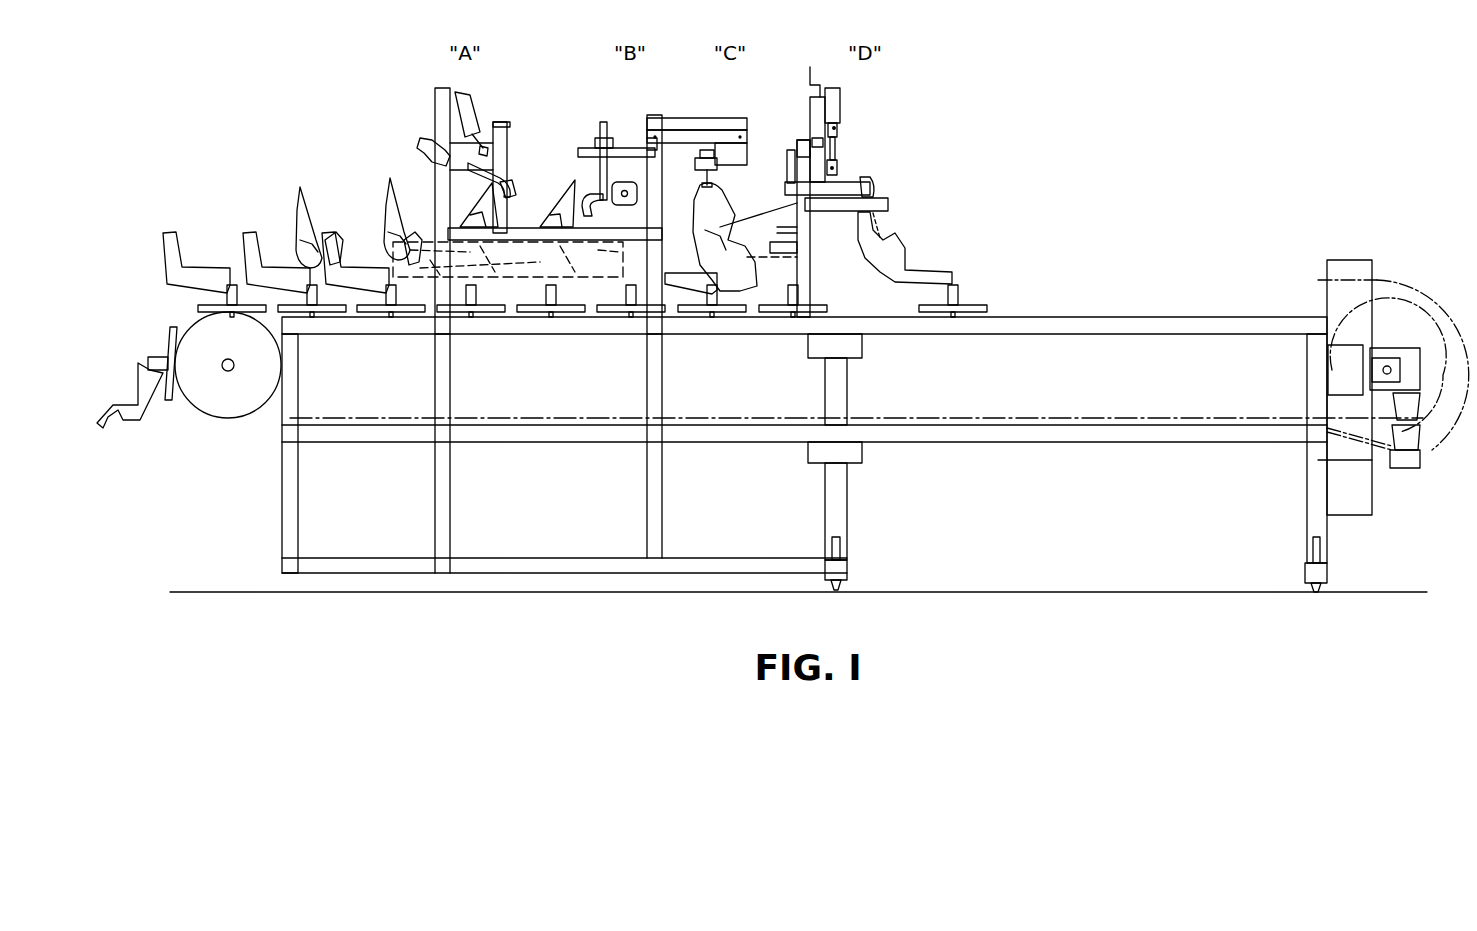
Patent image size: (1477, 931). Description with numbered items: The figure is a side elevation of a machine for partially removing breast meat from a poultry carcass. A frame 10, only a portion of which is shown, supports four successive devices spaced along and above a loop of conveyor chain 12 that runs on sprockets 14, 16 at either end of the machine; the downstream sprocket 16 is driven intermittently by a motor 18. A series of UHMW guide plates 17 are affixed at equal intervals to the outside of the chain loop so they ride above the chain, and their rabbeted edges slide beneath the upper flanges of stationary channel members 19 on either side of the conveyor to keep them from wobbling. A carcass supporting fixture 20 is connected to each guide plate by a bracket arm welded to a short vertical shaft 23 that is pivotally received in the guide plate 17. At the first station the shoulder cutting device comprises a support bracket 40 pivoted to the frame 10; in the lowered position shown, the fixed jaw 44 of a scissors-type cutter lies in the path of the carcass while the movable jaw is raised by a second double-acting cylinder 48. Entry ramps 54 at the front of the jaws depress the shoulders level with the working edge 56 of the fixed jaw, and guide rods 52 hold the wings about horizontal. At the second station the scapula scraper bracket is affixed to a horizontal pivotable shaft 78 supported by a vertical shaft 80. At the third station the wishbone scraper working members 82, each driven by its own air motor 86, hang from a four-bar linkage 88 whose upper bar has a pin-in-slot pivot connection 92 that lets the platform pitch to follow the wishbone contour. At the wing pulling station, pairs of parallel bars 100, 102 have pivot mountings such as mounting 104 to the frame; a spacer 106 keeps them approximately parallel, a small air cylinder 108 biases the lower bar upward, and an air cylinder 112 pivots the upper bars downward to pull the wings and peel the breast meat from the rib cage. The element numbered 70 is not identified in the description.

The frame 10 is at (718, 443).
The conveyor chain 12 is at (1063, 418).
The sprocket 14 is at (204, 406).
The downstream sprocket 16 is at (1400, 322).
The guide plate 17 is at (166, 327).
The motor 18 is at (1410, 468).
The channel member 19 is at (206, 276).
The carcass supporting fixture 20 is at (299, 187).
The vertical shaft 23 is at (960, 298).
The support bracket 40 is at (503, 126).
The fixed jaw 44 is at (505, 190).
The second double-acting cylinder 48 is at (430, 157).
The guide rods 52 is at (462, 266).
The entry ramps 54 is at (470, 190).
The working edge 56 is at (506, 180).
The motor 70 is at (637, 181).
The horizontal pivotable shaft 78 is at (590, 214).
The vertical shaft 80 is at (603, 128).
The working member 82 is at (721, 187).
The air motor 86 is at (694, 150).
The four-bar linkage 88 is at (719, 118).
The pivot connection 92 is at (748, 141).
The upper bar 100 is at (872, 189).
The lower bar 102 is at (890, 205).
The pivot mounting 104 is at (809, 231).
The spacer 106 is at (864, 180).
The small air cylinder 108 is at (810, 219).
The air cylinder 112 is at (840, 108).